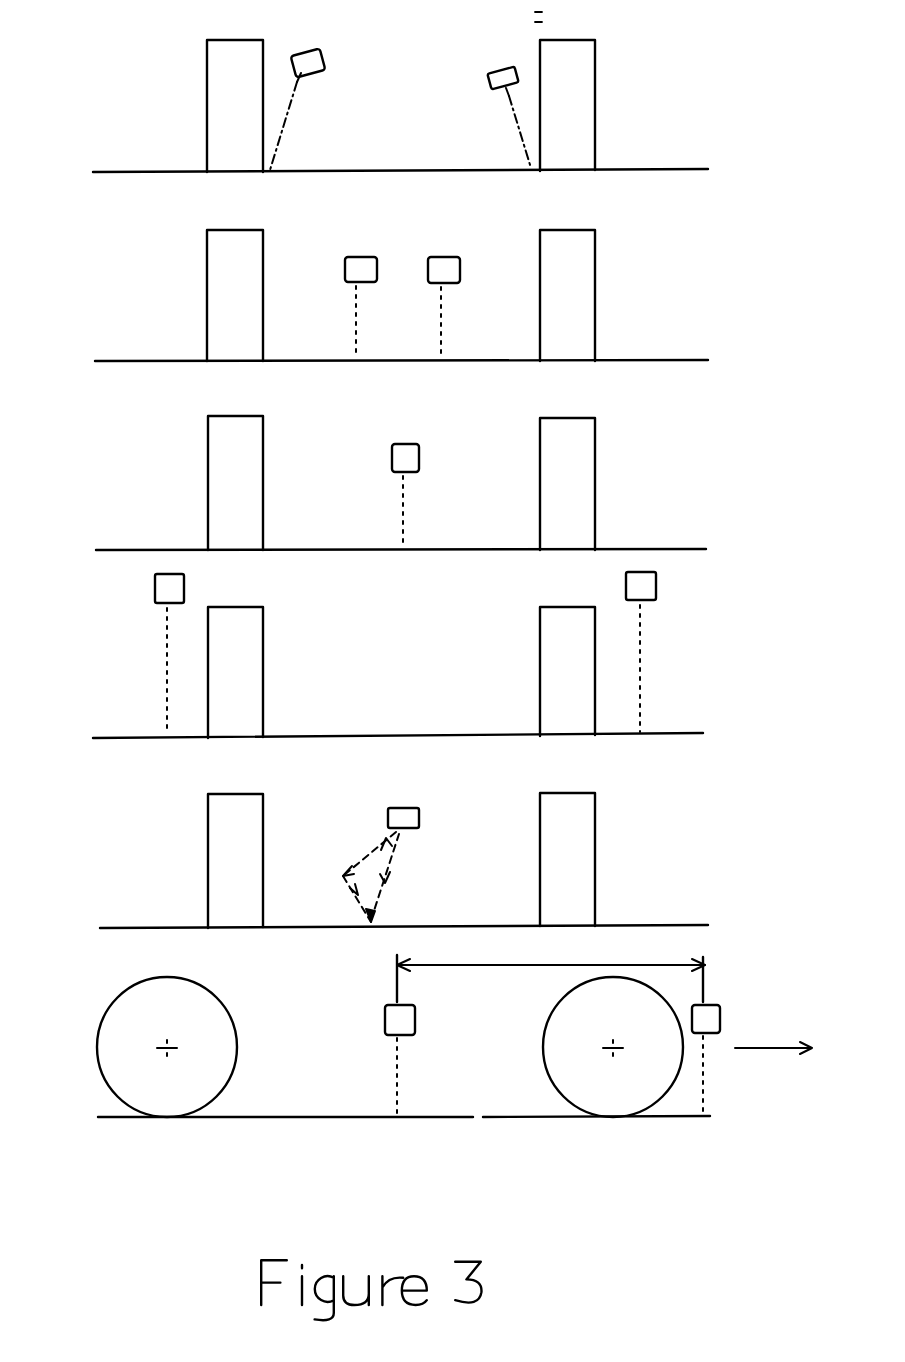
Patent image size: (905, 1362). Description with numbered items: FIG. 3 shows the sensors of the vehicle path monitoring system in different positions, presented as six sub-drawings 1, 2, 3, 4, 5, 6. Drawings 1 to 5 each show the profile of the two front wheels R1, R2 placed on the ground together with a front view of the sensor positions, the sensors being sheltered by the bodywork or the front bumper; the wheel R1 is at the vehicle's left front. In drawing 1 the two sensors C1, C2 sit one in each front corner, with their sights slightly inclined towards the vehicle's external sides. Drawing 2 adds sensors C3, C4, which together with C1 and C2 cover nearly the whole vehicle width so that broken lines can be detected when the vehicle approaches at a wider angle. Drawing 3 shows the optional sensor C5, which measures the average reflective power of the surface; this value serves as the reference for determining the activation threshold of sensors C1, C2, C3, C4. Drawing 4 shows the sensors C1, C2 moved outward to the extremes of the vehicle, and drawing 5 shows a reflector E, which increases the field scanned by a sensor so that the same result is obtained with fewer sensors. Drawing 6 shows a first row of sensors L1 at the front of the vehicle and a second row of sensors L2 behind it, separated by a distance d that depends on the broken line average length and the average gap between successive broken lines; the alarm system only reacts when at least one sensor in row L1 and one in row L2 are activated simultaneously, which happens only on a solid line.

The drawing 1 of FIG. 3 1 is at (400, 92).
The drawing 2 of FIG. 3 2 is at (401, 295).
The drawing 3 of FIG. 3 is at (401, 483).
The drawing 4 of FIG. 3 4 is at (381, 672).
The drawing 5 of FIG. 3 5 is at (390, 860).
The drawing 6 of FIG. 3 6 is at (433, 1047).
The front wheel R1 is at (601, 105).
The front wheel R2 is at (190, 105).
The sensor C1 is at (578, 372).
The sensor C2 is at (196, 366).
The sensor C3 is at (441, 282).
The sensor C4 is at (340, 286).
The sensor C5 is at (391, 468).
The first row of sensors L1 is at (701, 1072).
The second row of sensors L2 is at (384, 1071).
The distance d is at (551, 986).
The reflector E is at (484, 882).